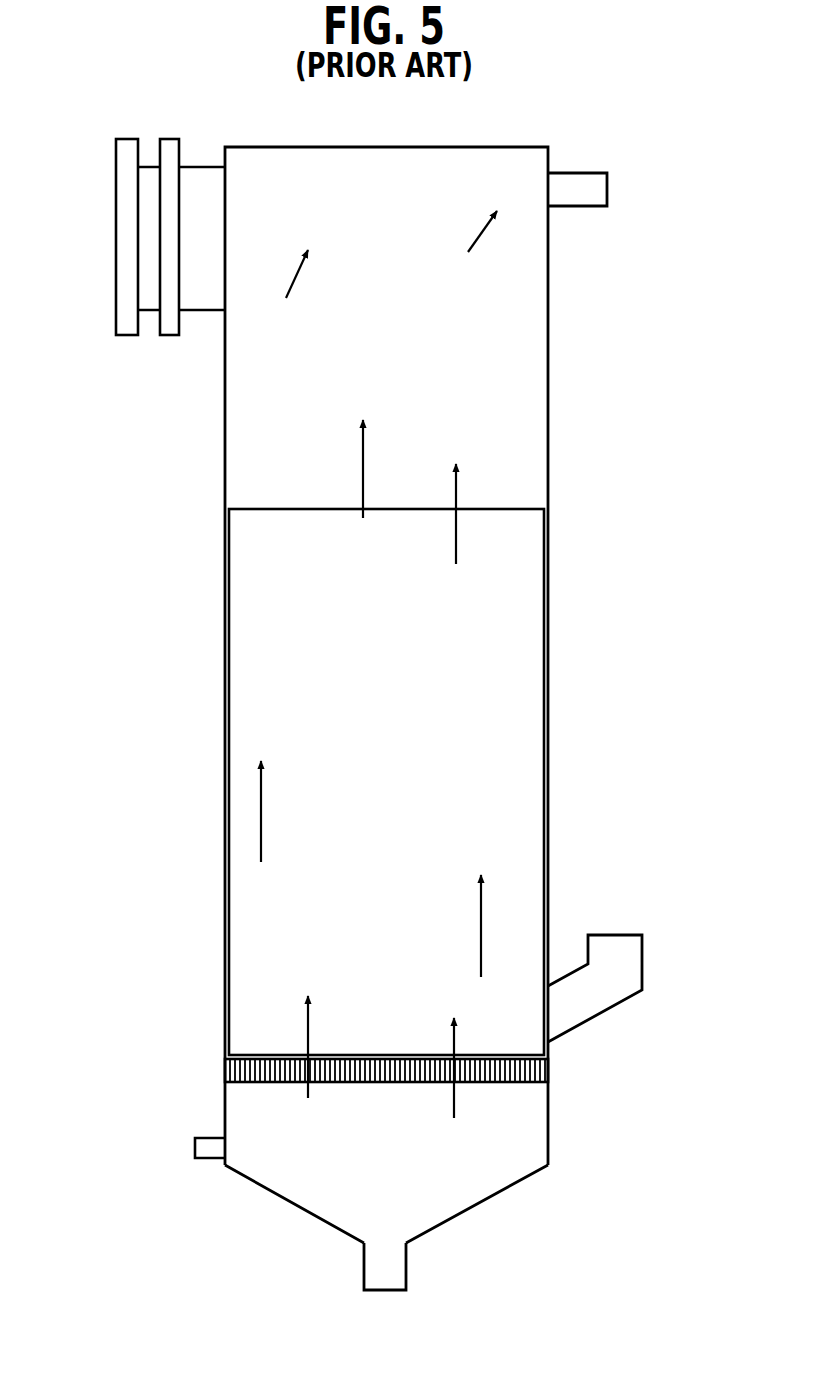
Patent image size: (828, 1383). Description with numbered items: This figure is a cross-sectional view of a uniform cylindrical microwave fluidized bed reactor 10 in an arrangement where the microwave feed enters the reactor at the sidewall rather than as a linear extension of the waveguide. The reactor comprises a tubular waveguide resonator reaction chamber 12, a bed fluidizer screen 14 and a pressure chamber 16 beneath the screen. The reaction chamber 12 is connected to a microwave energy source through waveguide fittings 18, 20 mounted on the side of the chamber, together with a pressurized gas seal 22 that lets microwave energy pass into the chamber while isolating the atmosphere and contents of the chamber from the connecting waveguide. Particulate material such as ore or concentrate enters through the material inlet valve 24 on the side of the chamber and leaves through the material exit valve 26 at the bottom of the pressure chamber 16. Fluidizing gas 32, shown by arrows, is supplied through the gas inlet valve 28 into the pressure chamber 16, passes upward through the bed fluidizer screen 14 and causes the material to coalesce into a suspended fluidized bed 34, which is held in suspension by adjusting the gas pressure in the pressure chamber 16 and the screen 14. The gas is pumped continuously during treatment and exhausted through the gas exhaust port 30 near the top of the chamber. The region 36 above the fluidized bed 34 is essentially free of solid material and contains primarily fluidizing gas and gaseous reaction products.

The microwave fluidized bed reactor 10 is at (640, 742).
The reaction chamber 12 is at (225, 373).
The bed fluidizer screen 14 is at (240, 1072).
The pressure chamber 16 is at (243, 1128).
The waveguide fitting 18 is at (127, 139).
The waveguide fitting 20 is at (171, 139).
The pressurized gas seal 22 is at (150, 167).
The material inlet valve 24 is at (617, 935).
The material exit valve 26 is at (406, 1267).
The gas inlet valve 28 is at (195, 1147).
The gas exhaust port 30 is at (609, 190).
The gas 32 is at (302, 1030).
The bed 34 is at (275, 641).
The region above the fluidized bed 36 is at (520, 360).